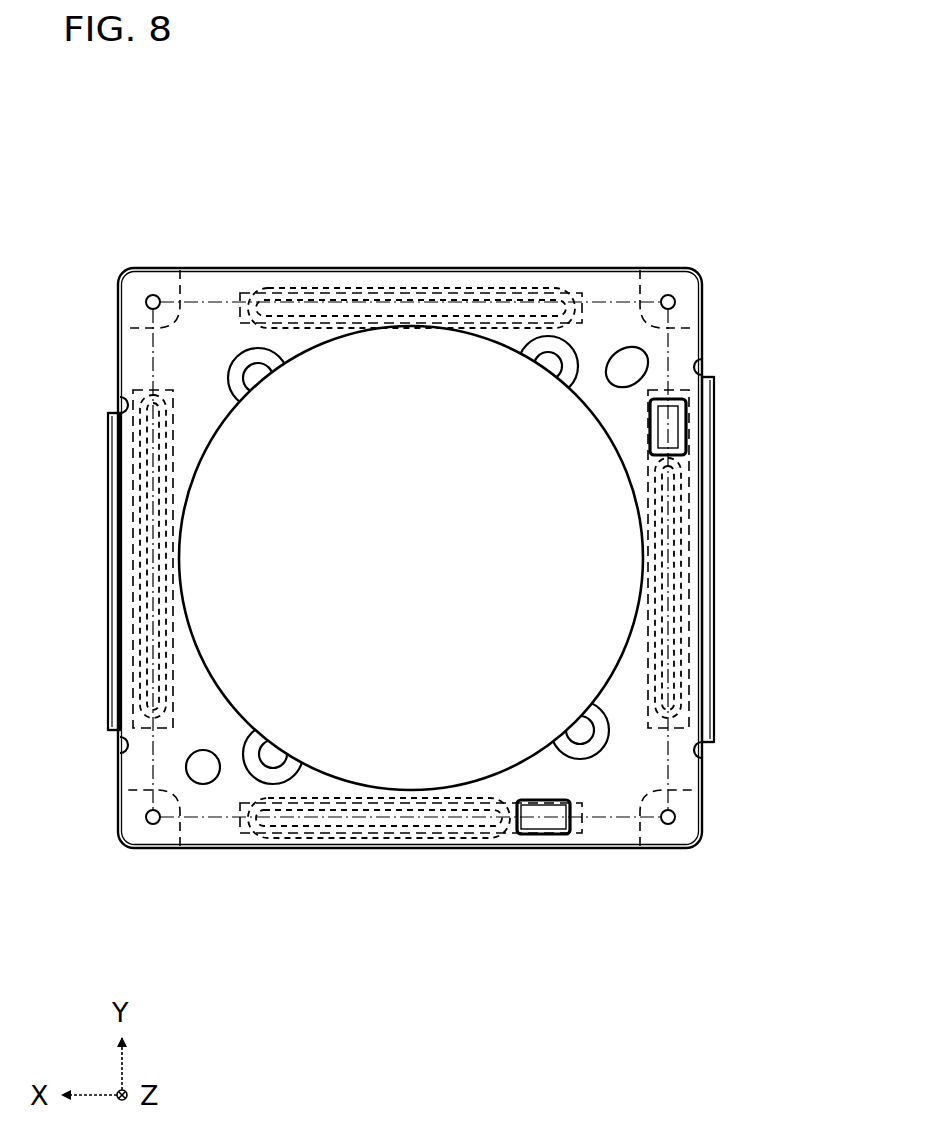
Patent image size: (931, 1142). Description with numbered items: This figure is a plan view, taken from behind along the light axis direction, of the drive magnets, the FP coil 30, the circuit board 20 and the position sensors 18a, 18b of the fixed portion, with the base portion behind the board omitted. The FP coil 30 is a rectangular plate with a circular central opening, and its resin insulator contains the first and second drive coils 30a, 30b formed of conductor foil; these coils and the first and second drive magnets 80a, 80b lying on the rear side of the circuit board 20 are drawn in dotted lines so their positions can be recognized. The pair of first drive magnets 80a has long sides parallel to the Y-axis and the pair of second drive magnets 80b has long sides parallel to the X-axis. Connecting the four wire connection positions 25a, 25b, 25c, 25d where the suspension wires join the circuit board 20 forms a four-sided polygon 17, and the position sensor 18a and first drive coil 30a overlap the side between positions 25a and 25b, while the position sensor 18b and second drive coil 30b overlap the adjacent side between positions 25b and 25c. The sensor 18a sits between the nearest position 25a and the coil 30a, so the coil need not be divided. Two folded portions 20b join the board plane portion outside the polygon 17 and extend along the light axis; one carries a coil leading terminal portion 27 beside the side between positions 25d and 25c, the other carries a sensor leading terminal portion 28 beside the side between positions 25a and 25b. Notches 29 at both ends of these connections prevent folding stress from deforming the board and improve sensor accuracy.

The four-sided polygon 17 is at (597, 300).
The circuit board 20 is at (684, 263).
The folded portions 20b is at (715, 394).
The wire connection position 25a is at (676, 302).
The wire connection position 25b is at (670, 824).
The wire connection position 25c is at (153, 824).
The wire connection position 25d is at (153, 295).
The coil leading terminal portion 27 is at (110, 593).
The sensor leading terminal portion 28 is at (715, 458).
The notches 29 is at (705, 367).
The FP coil 30 is at (640, 842).
The first drive coil 30a is at (690, 535).
The second drive coil 30b is at (428, 288).
The position sensor 18a is at (683, 427).
The position sensor 18b is at (546, 835).
The first drive magnets 80a is at (713, 715).
The second drive magnets 80b is at (240, 290).